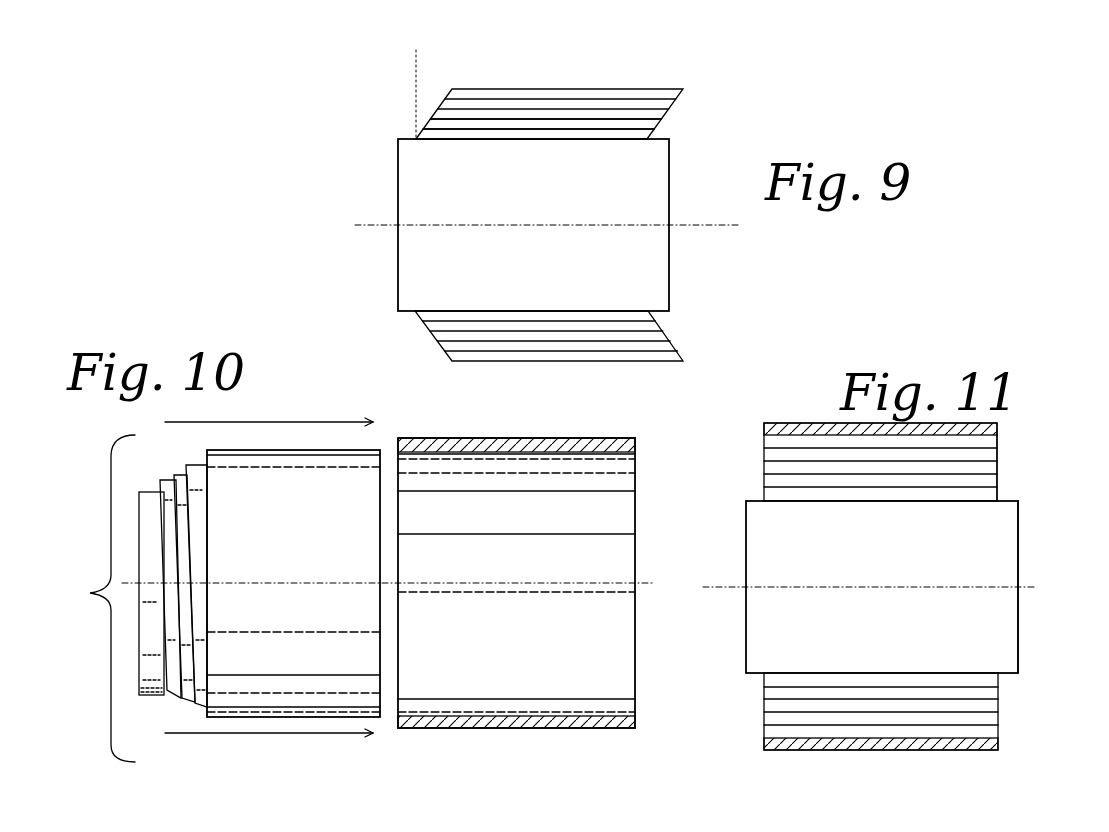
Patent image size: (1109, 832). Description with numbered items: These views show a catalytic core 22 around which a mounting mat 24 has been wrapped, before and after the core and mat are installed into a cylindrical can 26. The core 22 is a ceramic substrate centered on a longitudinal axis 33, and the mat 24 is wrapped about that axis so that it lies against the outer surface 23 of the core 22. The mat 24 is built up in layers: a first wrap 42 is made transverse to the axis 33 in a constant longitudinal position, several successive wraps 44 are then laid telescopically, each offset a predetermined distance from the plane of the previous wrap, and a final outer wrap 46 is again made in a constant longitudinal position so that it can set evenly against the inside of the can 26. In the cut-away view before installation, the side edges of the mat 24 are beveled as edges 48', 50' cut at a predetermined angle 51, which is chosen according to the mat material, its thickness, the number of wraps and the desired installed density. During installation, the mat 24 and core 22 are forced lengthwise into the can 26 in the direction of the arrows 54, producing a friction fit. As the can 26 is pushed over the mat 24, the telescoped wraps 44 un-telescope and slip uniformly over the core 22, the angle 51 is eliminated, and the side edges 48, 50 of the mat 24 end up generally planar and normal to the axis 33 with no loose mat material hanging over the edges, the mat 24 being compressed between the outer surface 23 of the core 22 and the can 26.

In FIG. 9, the catalytic core 22 is at (415, 280).
In FIG. 10, the catalytic core 22 is at (150, 667).
In FIG. 11, the catalytic core 22 is at (762, 642).
In FIG. 11, the outer surface 23 is at (1008, 675).
In FIG. 9, the mounting mat 24 is at (445, 348).
In FIG. 10, the mounting mat 24 is at (293, 583).
In FIG. 10, the can 26 is at (516, 583).
In FIG. 11, the can 26 is at (780, 432).
In FIG. 9, the longitudinal axis 33 is at (700, 225).
In FIG. 10, the longitudinal axis 33 is at (647, 583).
In FIG. 11, the longitudinal axis 33 is at (722, 587).
In FIG. 9, the first wrap 42 is at (637, 140).
In FIG. 10, the first wrap 42 is at (177, 687).
In FIG. 11, the first wrap 42 is at (777, 493).
In FIG. 9, the successive wrap 44 is at (677, 103).
In FIG. 10, the successive wrap 44 is at (200, 463).
In FIG. 11, the successive wrap 44 is at (767, 472).
In FIG. 9, the final outer wrap 46 is at (660, 93).
In FIG. 10, the final outer wrap 46 is at (233, 712).
In FIG. 11, the final outer wrap 46 is at (765, 448).
In FIG. 11, the side edge 48 is at (824, 431).
In FIG. 9, the beveled edge 48' is at (613, 101).
In FIG. 9, the side edge 50 is at (604, 103).
In FIG. 11, the side edge 50 is at (1022, 461).
In FIG. 9, the beveled edge 50' is at (492, 124).
In FIG. 9, the predetermined angle 51 is at (432, 88).
In FIG. 10, the arrow 54 is at (257, 422).